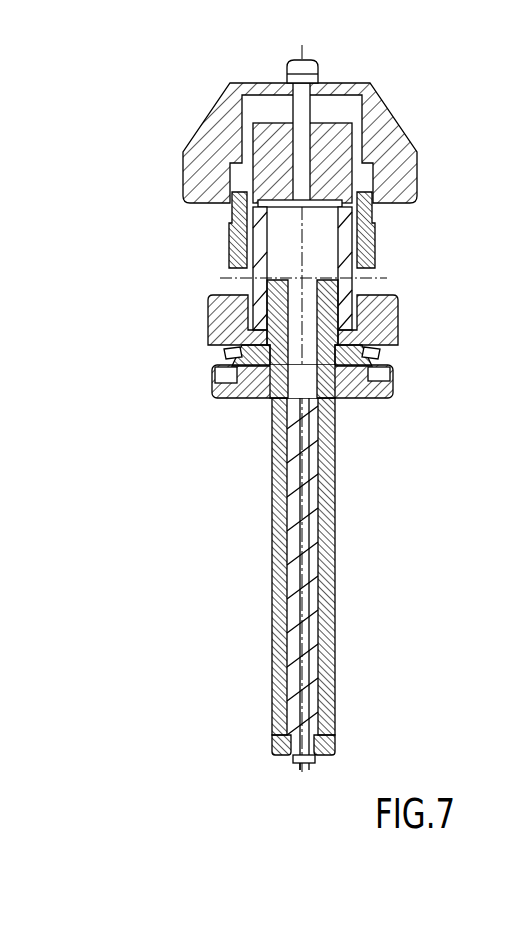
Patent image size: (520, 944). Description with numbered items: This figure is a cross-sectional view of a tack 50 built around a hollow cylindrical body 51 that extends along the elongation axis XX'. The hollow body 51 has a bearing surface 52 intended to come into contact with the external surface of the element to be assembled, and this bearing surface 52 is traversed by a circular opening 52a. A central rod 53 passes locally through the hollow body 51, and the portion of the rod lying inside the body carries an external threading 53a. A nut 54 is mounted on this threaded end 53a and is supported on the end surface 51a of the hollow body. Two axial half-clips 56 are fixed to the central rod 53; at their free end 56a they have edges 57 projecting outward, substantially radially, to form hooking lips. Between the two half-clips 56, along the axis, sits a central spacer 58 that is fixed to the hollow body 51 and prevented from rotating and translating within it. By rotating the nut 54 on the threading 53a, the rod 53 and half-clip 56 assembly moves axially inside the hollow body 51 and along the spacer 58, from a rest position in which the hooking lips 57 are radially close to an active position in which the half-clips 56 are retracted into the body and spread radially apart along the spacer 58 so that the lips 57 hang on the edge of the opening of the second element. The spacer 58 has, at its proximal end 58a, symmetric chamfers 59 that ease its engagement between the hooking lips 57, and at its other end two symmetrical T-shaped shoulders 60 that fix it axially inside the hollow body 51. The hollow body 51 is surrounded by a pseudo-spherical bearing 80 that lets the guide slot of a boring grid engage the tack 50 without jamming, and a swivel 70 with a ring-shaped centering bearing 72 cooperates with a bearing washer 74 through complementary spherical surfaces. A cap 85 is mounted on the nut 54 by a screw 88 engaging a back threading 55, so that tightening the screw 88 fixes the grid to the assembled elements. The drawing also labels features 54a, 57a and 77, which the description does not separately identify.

The tack 50 is at (442, 249).
The hollow cylindrical body 51 is at (397, 330).
The end surface of the hollow body 51a is at (374, 353).
The bearing surface 52 is at (246, 398).
The circular opening 52a is at (226, 353).
The central rod 53 is at (350, 290).
The external threading 53a is at (268, 300).
The nut 54 is at (232, 252).
The outer sleeve upper portion 54a is at (250, 222).
The back threading 55 is at (358, 140).
The axial half-clips 56 is at (273, 617).
The free end of the half-clips 56a is at (273, 728).
The hooking lips 57 is at (272, 746).
The foot portion 57a is at (330, 730).
The central spacer 58 is at (292, 515).
The proximal end of the spacer 58a is at (310, 766).
The symmetric chamfers 59 is at (290, 760).
The T-shaped shoulders 60 is at (370, 216).
The swivel 70 is at (205, 392).
The ring-shaped centering bearing 72 is at (232, 400).
The bearing washer 74 is at (393, 384).
The flange right portion 77 is at (344, 400).
The pseudo-spherical bearing 80 is at (207, 320).
The cap 85 is at (205, 147).
The screw 88 is at (293, 106).